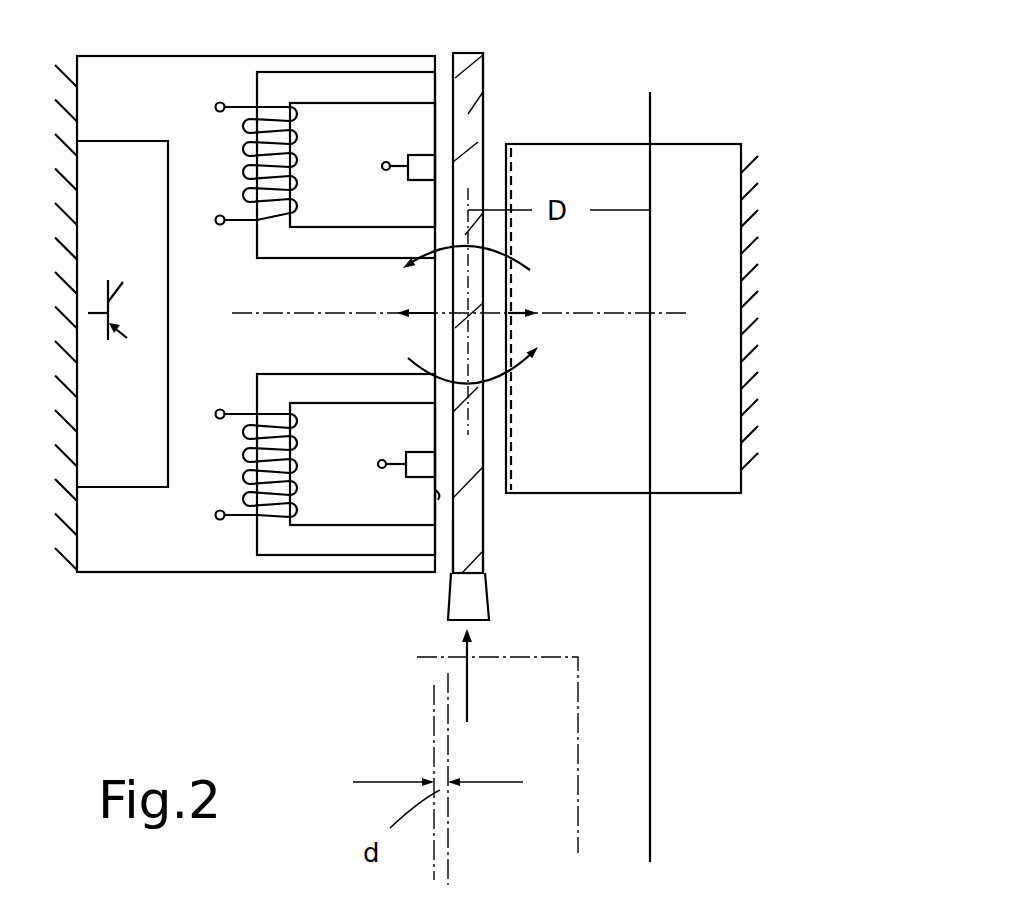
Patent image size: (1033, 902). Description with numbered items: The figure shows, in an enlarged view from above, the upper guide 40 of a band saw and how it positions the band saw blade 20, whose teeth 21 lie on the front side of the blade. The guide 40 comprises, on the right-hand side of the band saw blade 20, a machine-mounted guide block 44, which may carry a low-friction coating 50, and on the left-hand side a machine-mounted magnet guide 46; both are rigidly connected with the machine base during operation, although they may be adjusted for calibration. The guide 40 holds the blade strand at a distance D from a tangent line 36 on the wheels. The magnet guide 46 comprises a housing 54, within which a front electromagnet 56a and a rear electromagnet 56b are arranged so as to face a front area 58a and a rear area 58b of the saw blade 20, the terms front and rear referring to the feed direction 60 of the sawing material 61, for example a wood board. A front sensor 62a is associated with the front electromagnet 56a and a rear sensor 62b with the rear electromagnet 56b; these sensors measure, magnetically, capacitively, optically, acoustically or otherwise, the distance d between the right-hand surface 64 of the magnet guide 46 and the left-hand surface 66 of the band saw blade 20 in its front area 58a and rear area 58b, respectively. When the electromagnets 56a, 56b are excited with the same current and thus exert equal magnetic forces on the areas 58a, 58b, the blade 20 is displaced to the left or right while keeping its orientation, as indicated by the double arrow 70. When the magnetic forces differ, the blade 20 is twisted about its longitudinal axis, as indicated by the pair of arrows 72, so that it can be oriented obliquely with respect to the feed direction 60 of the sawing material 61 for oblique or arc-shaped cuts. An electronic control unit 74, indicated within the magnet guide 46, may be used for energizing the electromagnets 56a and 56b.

The band saw blade 20 is at (490, 553).
The teeth 21 is at (473, 592).
The tangent line 36 is at (650, 724).
The upper guide 40 is at (740, 116).
The machine-mounted guide block 44 is at (684, 502).
The magnet guide 46 is at (110, 578).
The low-friction coating 50 is at (512, 155).
The housing 54 is at (212, 562).
The front electromagnet 56a is at (324, 545).
The rear electromagnet 56b is at (315, 85).
The front area 58a is at (478, 524).
The rear area 58b is at (485, 100).
The feed direction 60 is at (468, 688).
The sawing material 61 is at (557, 755).
The front sensor 62a is at (420, 460).
The rear sensor 62b is at (420, 172).
The surface of magnet guide 64 is at (440, 498).
The surface of band saw blade 66 is at (445, 543).
The double arrow 70 is at (518, 311).
The pair of arrows 72 is at (521, 374).
The electronic control unit 74 is at (128, 473).